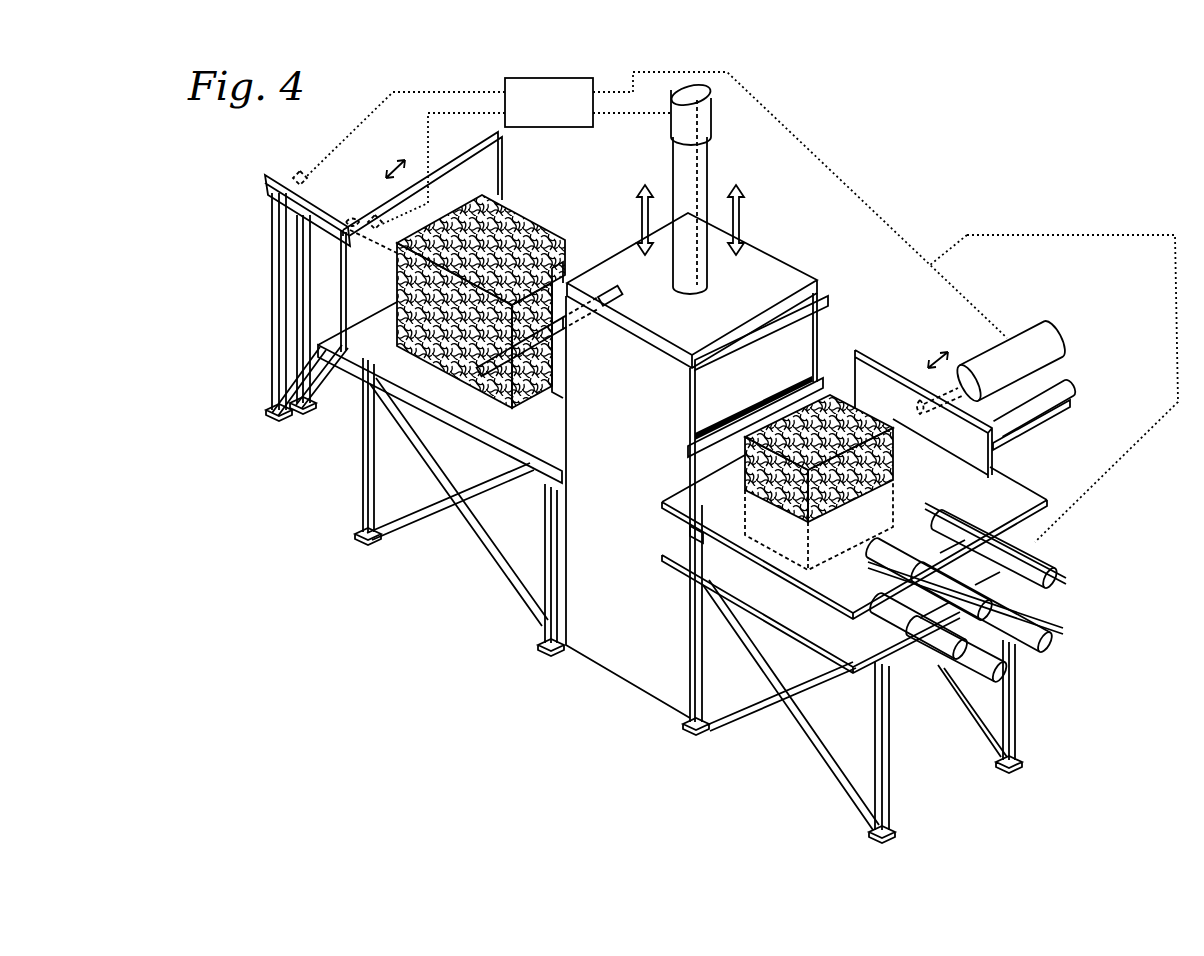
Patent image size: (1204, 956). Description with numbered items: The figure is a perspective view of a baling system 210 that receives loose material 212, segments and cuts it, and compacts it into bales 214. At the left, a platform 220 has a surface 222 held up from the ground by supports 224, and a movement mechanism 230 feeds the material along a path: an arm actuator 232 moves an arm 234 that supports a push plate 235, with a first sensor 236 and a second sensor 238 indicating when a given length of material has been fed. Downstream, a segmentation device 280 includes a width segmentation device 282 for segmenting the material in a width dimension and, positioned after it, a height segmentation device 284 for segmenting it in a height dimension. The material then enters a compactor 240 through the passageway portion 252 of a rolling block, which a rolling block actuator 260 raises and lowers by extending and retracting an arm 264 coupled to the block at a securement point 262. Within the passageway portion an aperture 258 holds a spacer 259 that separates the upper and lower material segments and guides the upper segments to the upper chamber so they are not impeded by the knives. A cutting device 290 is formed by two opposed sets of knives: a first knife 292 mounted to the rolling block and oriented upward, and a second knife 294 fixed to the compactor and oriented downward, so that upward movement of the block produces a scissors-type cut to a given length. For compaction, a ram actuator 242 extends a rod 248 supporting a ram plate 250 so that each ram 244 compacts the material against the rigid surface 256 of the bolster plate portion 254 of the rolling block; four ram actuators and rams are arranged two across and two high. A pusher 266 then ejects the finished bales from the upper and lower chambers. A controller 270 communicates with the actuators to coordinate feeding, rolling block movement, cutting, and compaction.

The baling system 210 is at (172, 150).
The material 212 is at (534, 262).
The bale 214 is at (867, 410).
The platform 220 is at (440, 392).
The surface 222 is at (418, 500).
The supports 224 is at (436, 506).
The movement mechanism 230 is at (236, 242).
The arm actuator 232 is at (290, 174).
The arm 234 is at (374, 216).
The push plate 235 is at (422, 184).
The first sensor 236 is at (354, 236).
The second sensor 238 is at (300, 171).
The compactor 240 is at (1094, 558).
The ram actuator 242 is at (1043, 590).
The ram 244 is at (978, 518).
The rod 248 is at (870, 556).
The ram plate 250 is at (909, 511).
The passageway portion 252 is at (822, 300).
The bolster plate portion 254 is at (705, 670).
The rigid surface 256 is at (811, 614).
The aperture 258 is at (802, 347).
The spacer 259 is at (753, 400).
The rolling block actuator 260 is at (707, 119).
The securement point 262 is at (692, 289).
The arm 264 is at (700, 180).
The pusher 266 is at (1098, 338).
The controller 270 is at (741, 307).
The segmentation device 280 is at (592, 338).
The width segmentation device 282 is at (555, 264).
The height segmentation device 284 is at (528, 340).
The cutting device 290 is at (664, 416).
The first knife 292 is at (692, 533).
The second knife 294 is at (730, 370).